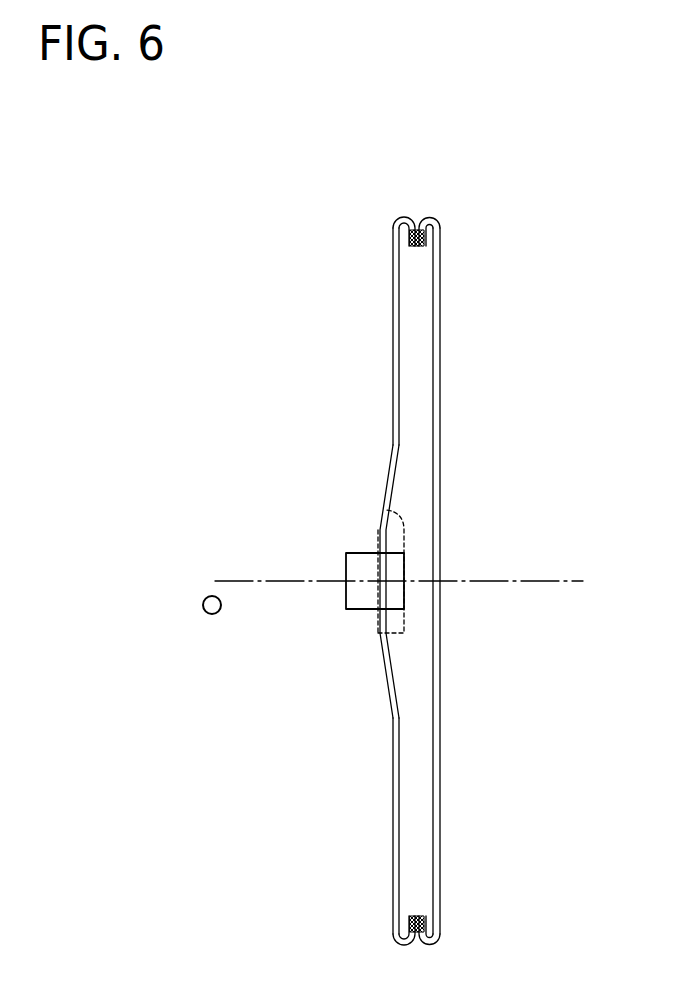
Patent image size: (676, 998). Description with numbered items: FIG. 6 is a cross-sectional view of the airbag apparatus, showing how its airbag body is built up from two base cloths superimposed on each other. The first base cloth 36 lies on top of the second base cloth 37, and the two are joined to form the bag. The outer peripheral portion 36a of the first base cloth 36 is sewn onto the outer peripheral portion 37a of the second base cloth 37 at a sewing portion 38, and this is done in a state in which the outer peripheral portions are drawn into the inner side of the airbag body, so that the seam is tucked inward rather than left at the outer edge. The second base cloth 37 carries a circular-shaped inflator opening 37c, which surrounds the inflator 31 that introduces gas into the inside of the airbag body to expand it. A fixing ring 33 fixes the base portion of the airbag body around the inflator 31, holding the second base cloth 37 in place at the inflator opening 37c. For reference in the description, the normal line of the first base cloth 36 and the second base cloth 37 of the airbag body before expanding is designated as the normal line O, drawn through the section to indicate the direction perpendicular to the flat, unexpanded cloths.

The inflator 31 is at (393, 552).
The fixing ring 33 is at (384, 504).
The first base cloth 36 is at (440, 425).
The outer peripheral portion 36a is at (420, 247).
The second base cloth 37 is at (393, 363).
The outer peripheral portion 37a is at (413, 242).
The inflator opening 37c is at (379, 608).
The sewing portion 38 is at (418, 237).
The normal line O is at (260, 582).